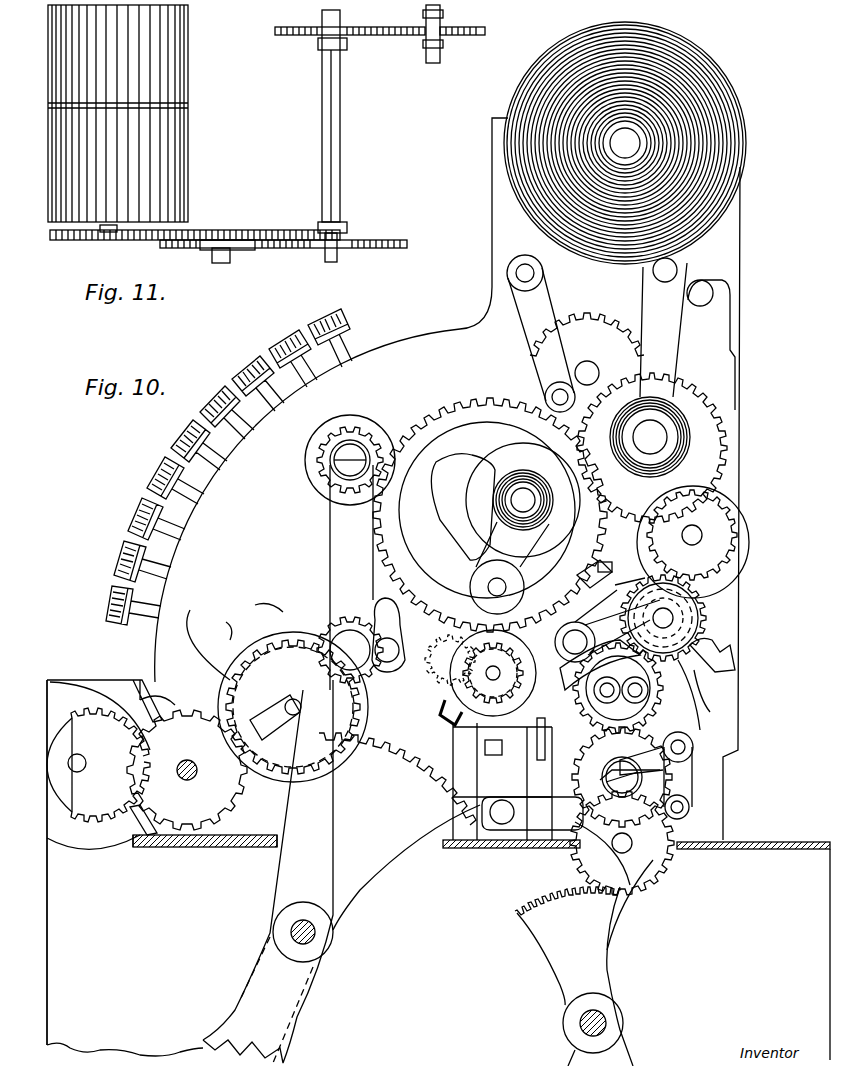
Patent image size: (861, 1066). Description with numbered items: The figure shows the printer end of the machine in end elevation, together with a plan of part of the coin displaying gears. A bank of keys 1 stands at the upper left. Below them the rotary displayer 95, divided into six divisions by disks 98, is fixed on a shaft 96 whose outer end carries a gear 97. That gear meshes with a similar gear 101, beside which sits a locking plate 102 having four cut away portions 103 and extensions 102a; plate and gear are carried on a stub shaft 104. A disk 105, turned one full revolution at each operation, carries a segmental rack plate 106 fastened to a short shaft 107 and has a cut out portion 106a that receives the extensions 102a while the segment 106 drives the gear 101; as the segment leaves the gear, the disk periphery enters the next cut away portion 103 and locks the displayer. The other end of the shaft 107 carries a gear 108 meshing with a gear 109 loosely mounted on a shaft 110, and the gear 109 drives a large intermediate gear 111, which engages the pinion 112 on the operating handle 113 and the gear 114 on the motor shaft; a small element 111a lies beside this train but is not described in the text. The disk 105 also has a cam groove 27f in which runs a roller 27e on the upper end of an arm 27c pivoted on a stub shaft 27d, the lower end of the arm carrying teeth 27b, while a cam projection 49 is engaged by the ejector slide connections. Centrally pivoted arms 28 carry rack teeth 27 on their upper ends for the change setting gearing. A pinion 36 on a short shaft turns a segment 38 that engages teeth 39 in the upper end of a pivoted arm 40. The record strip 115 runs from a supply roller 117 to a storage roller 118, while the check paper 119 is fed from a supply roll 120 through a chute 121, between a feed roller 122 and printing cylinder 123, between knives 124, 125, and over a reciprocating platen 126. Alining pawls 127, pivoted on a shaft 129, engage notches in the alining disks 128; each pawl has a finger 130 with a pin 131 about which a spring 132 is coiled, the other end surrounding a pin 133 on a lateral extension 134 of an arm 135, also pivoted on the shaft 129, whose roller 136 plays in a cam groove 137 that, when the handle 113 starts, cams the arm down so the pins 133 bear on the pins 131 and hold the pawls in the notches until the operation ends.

In FIG. 10, the keys 1 is at (173, 423).
In FIG. 10, the rack teeth 27 is at (397, 779).
In FIG. 10, the teeth 27b is at (318, 640).
In FIG. 10, the arm 27c is at (335, 885).
In FIG. 10, the stub shaft 27d is at (318, 930).
In FIG. 10, the roller 27e is at (372, 640).
In FIG. 10, the cam groove 27f is at (275, 742).
In FIG. 10, the centrally pivoted arms 28 is at (288, 871).
In FIG. 10, the pinion 36 is at (648, 866).
In FIG. 10, the segment 38 is at (573, 868).
In FIG. 10, the teeth 39 is at (573, 893).
In FIG. 10, the pivoted arm 40 is at (583, 973).
In FIG. 10, the cam projection 49 is at (587, 362).
In FIG. 11, the rotary displayer 95 is at (190, 116).
In FIG. 11, the shaft 96 is at (100, 225).
In FIG. 10, the shaft 96 is at (75, 772).
In FIG. 11, the gear 97 is at (115, 243).
In FIG. 10, the gear 97 is at (78, 756).
In FIG. 11, the disks 98 is at (105, 102).
In FIG. 11, the gear 101 is at (210, 233).
In FIG. 10, the gear 101 is at (205, 832).
In FIG. 11, the locking plate 102 is at (205, 252).
In FIG. 10, the locking plate 102 is at (150, 825).
In FIG. 10, the extensions 102a is at (200, 705).
In FIG. 10, the cut away portions 103 is at (85, 679).
In FIG. 10, the stub shaft 104 is at (190, 760).
In FIG. 11, the disk 105 is at (318, 250).
In FIG. 10, the disk 105 is at (338, 795).
In FIG. 11, the segmental rack plate 106 is at (282, 238).
In FIG. 10, the segmental rack plate 106 is at (235, 665).
In FIG. 10, the cut out portion 106a is at (232, 628).
In FIG. 11, the short shaft 107 is at (340, 163).
In FIG. 10, the short shaft 107 is at (258, 600).
In FIG. 11, the gear 108 is at (290, 36).
In FIG. 11, the gear 109 is at (470, 36).
In FIG. 11, the shaft 110 is at (420, 52).
In FIG. 10, the shaft 110 is at (483, 573).
In FIG. 10, the large intermediate gear 111 is at (632, 412).
In FIG. 10, the pinion 111a is at (440, 722).
In FIG. 10, the pinion 112 is at (360, 440).
In FIG. 10, the operating handle 113 is at (335, 525).
In FIG. 10, the gear 114 is at (465, 397).
In FIG. 10, the record strip 115 is at (690, 527).
In FIG. 10, the supply roller 117 is at (683, 397).
In FIG. 10, the storage roller 118 is at (527, 520).
In FIG. 10, the check paper 119 is at (740, 330).
In FIG. 10, the supply roll 120 is at (705, 78).
In FIG. 10, the chute 121 is at (600, 780).
In FIG. 10, the feed roller 122 is at (645, 783).
In FIG. 10, the printing cylinder 123 is at (708, 690).
In FIG. 10, the knife 124 is at (692, 745).
In FIG. 10, the knife 125 is at (505, 812).
In FIG. 10, the platen 126 is at (492, 758).
In FIG. 10, the alining pawls 127 is at (592, 702).
In FIG. 10, the alining disks 128 is at (497, 588).
In FIG. 10, the shaft 129 is at (712, 652).
In FIG. 10, the finger 130 is at (620, 585).
In FIG. 10, the pin 131 is at (575, 660).
In FIG. 10, the spring 132 is at (585, 580).
In FIG. 10, the pin 133 is at (565, 638).
In FIG. 10, the lateral extension 134 is at (590, 604).
In FIG. 10, the arm 135 is at (606, 562).
In FIG. 10, the roller 136 is at (745, 560).
In FIG. 10, the cam groove 137 is at (700, 617).